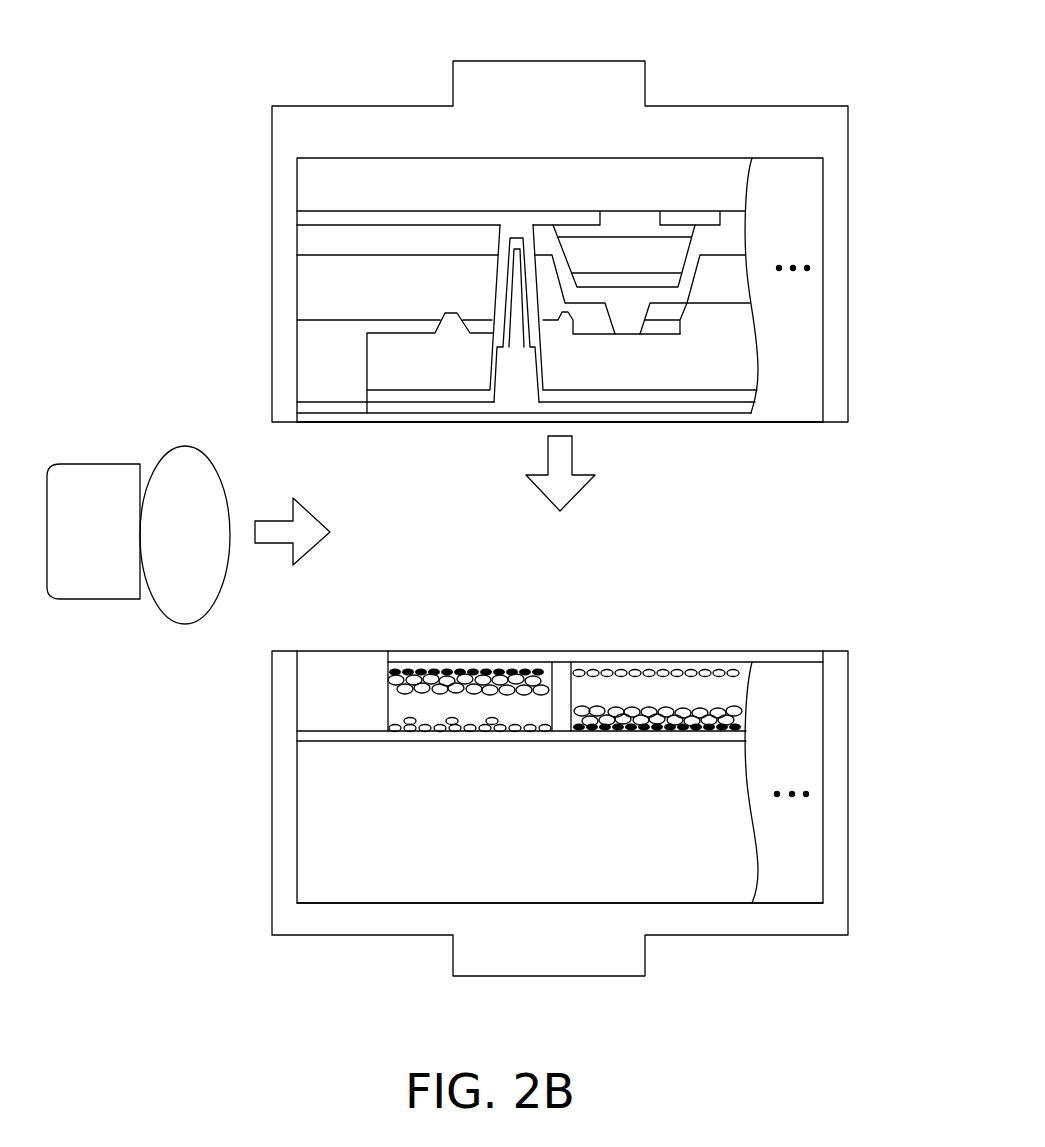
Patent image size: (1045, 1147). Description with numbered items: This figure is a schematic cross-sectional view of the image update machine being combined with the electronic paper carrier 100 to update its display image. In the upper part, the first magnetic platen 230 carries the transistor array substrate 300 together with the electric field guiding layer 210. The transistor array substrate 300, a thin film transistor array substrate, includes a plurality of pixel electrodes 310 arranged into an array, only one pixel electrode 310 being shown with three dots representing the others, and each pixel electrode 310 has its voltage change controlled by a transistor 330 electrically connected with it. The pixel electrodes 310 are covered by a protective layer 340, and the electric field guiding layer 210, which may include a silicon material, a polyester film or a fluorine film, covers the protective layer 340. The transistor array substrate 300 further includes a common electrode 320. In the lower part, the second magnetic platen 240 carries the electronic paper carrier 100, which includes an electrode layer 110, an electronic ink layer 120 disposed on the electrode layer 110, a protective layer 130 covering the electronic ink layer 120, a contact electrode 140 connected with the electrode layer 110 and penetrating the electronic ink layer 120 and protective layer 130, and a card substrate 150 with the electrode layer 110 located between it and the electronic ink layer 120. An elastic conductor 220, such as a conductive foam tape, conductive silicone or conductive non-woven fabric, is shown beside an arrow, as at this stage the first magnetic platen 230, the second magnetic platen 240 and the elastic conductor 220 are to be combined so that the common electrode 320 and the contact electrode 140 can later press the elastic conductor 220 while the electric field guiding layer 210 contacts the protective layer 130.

The electronic paper carrier 100 is at (320, 822).
The electrode layer 110 is at (433, 735).
The electronic ink layer 120 is at (733, 702).
The protective layer 130 is at (512, 652).
The contact electrode 140 is at (337, 663).
The card substrate 150 is at (342, 893).
The electric field guiding layer 210 is at (405, 418).
The elastic conductor 220 is at (178, 623).
The first magnetic platen 230 is at (838, 136).
The second magnetic platen 240 is at (838, 767).
The transistor array substrate 300 is at (642, 222).
The pixel electrode 310 is at (664, 393).
The common electrode 320 is at (318, 361).
The transistor 330 is at (589, 250).
The protective layer 340 is at (725, 405).